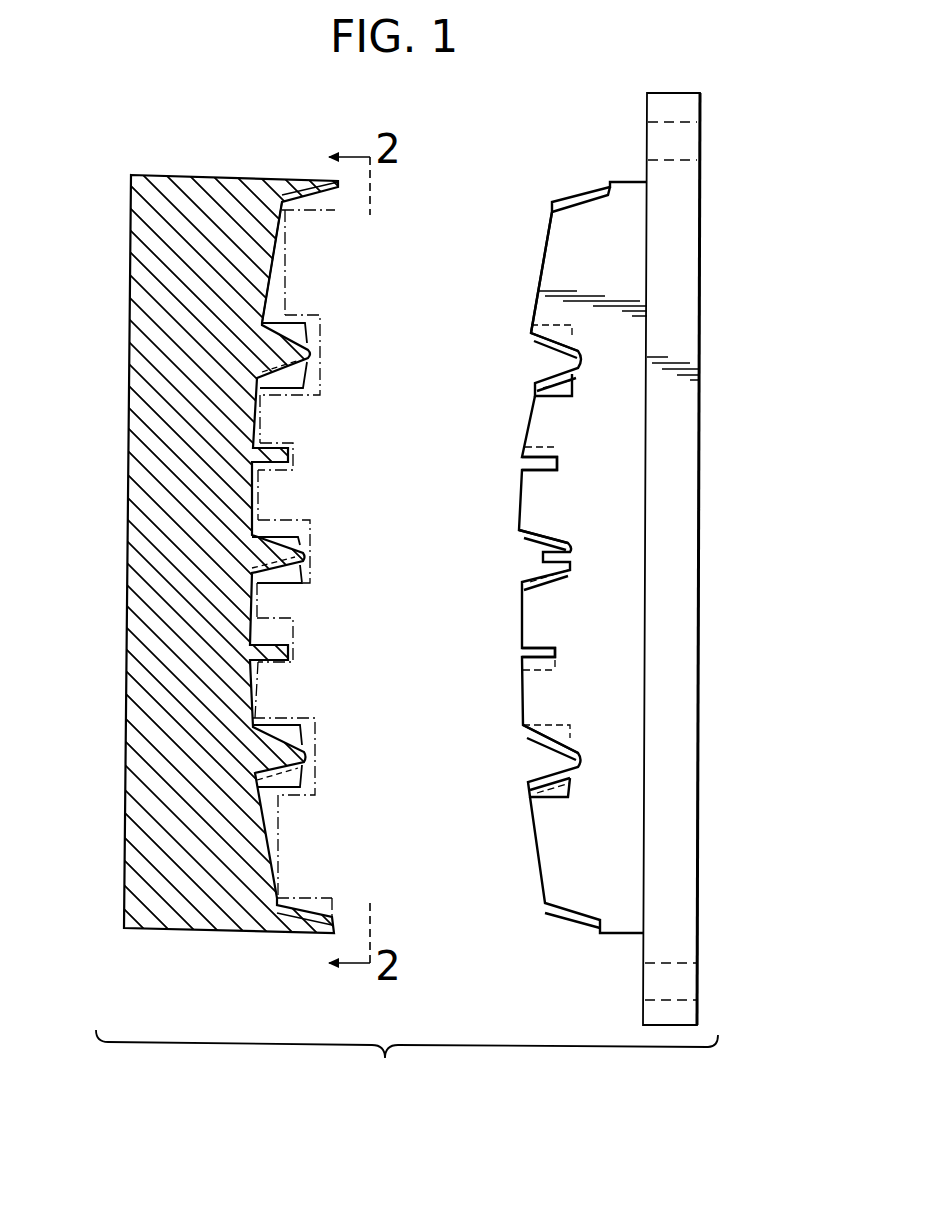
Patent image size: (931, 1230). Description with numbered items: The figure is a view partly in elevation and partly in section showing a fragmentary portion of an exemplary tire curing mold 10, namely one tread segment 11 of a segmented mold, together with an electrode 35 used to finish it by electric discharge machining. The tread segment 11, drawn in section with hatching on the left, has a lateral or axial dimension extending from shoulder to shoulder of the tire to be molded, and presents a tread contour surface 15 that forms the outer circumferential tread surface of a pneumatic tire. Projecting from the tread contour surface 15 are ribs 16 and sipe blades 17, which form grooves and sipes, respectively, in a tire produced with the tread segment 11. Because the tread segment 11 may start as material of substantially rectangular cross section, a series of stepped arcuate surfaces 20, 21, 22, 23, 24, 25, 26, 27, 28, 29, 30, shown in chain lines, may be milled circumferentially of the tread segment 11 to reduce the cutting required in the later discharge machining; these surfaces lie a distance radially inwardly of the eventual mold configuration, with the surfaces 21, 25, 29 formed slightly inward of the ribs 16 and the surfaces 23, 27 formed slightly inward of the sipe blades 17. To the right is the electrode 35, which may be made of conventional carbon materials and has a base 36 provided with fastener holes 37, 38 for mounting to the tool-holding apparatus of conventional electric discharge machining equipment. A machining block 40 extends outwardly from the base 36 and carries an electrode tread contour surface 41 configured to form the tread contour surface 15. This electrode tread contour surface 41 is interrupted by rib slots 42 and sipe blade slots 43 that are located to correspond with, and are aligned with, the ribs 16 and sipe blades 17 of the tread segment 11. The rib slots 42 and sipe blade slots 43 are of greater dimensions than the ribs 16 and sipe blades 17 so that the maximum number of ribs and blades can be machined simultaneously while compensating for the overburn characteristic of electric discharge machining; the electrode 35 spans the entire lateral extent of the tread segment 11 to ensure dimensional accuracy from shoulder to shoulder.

The tire curing mold 10 is at (190, 155).
The tread segment 11 is at (135, 539).
The tread contour surface 15 is at (272, 263).
The ribs 16 is at (310, 352).
The sipe blades 17 is at (290, 460).
The stepped arcuate surface 20 is at (286, 233).
The stepped arcuate surface 21 is at (322, 325).
The stepped arcuate surface 22 is at (290, 407).
The stepped arcuate surface 23 is at (296, 446).
The stepped arcuate surface 24 is at (270, 490).
The stepped arcuate surface 25 is at (312, 535).
The stepped arcuate surface 26 is at (270, 616).
The stepped arcuate surface 27 is at (295, 668).
The stepped arcuate surface 28 is at (270, 700).
The stepped arcuate surface 29 is at (318, 730).
The stepped arcuate surface 30 is at (282, 880).
The electrode 35 is at (578, 164).
The base 36 is at (690, 470).
The fastener hole 37 is at (692, 980).
The fastener hole 38 is at (692, 138).
The machining block 40 is at (624, 286).
The electrode tread contour surface 41 is at (543, 250).
The rib slots 42 is at (548, 355).
The sipe blade slots 43 is at (530, 462).